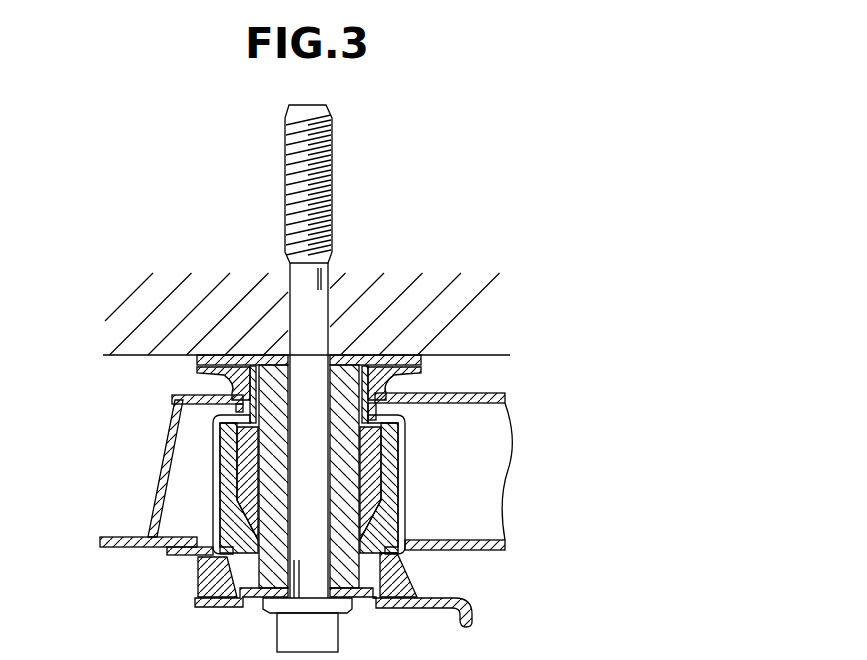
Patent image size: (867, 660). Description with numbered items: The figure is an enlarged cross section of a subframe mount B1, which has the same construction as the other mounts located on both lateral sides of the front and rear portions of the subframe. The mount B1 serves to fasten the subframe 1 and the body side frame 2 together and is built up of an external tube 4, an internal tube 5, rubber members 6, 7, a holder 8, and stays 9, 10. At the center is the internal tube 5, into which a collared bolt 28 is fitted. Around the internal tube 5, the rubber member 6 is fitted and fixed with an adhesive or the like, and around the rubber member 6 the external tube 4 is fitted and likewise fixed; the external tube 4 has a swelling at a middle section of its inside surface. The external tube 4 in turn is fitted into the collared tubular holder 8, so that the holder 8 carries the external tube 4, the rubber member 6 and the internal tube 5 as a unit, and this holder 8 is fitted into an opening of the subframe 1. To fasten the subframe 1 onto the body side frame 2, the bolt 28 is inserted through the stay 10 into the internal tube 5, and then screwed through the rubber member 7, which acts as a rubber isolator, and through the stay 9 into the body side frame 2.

The subframe mount B1 is at (170, 268).
The subframe 1 is at (168, 430).
The body side frame 2 is at (485, 315).
The external tube 4 is at (222, 510).
The internal tube 5 is at (353, 578).
The rubber member 6 is at (200, 576).
The rubber member 7 is at (207, 383).
The holder 8 is at (212, 478).
The stay 9 is at (198, 361).
The stay 10 is at (262, 598).
The collared bolt 28 is at (335, 178).